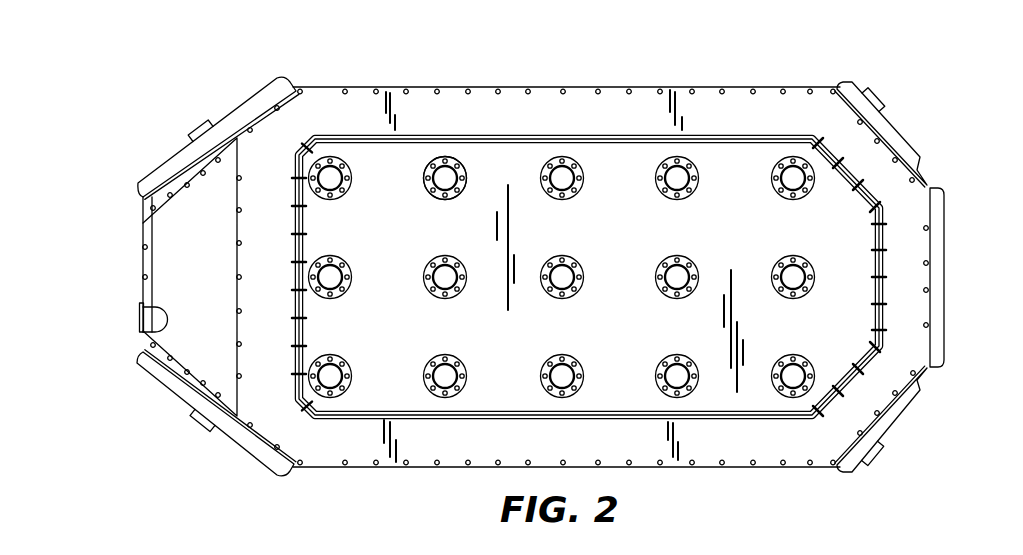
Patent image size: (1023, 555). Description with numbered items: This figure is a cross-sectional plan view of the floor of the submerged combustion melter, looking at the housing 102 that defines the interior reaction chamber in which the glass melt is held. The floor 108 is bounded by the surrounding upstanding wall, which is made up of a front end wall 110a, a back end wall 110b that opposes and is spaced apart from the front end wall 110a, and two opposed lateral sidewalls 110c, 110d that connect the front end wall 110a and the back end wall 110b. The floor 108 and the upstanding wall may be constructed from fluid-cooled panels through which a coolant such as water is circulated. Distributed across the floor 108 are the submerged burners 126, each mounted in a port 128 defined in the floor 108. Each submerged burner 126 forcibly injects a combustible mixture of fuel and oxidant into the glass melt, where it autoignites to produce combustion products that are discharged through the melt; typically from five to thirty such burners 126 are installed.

The housing 102 is at (345, 77).
The floor 108 is at (632, 239).
The front end wall 110a is at (145, 256).
The back end wall 110b is at (918, 285).
The lateral sidewall 110c is at (568, 108).
The lateral sidewall 110d is at (645, 447).
The submerged burner 126 is at (445, 277).
The port 128 is at (462, 187).